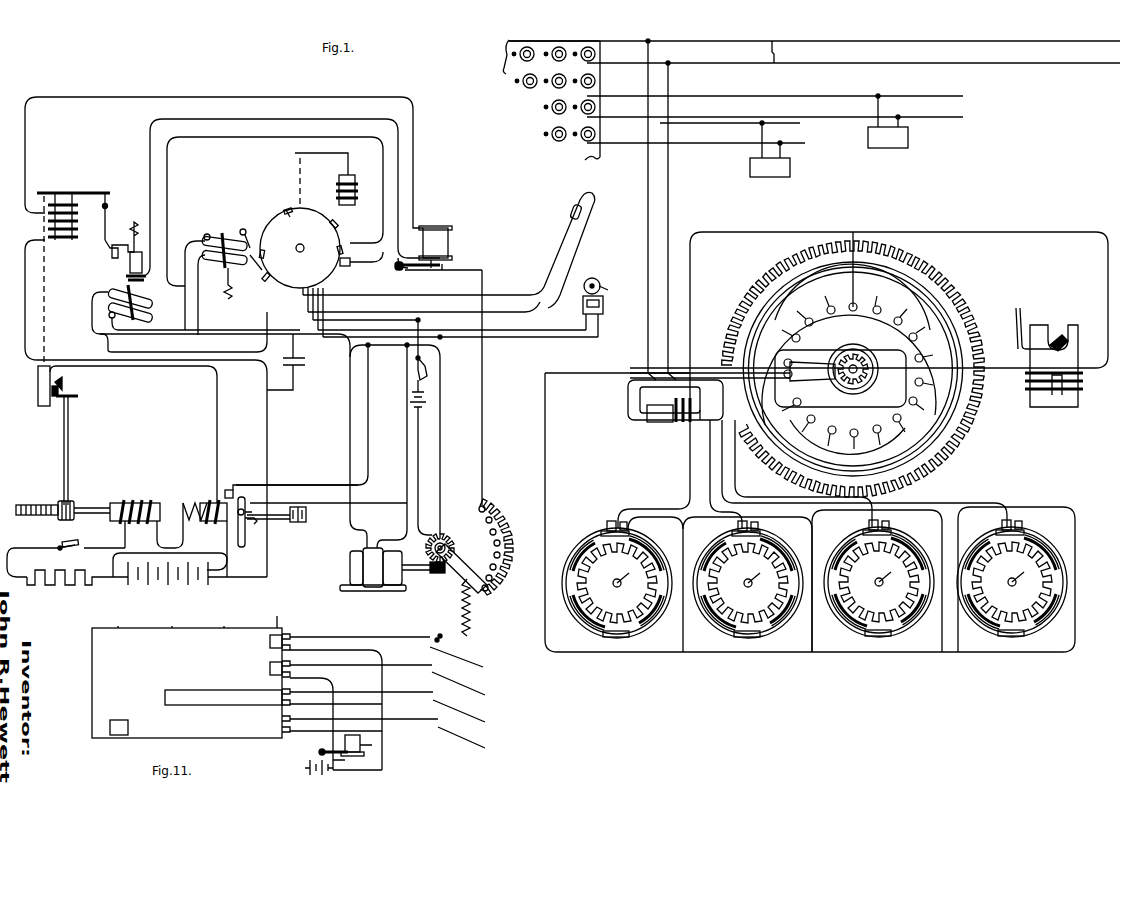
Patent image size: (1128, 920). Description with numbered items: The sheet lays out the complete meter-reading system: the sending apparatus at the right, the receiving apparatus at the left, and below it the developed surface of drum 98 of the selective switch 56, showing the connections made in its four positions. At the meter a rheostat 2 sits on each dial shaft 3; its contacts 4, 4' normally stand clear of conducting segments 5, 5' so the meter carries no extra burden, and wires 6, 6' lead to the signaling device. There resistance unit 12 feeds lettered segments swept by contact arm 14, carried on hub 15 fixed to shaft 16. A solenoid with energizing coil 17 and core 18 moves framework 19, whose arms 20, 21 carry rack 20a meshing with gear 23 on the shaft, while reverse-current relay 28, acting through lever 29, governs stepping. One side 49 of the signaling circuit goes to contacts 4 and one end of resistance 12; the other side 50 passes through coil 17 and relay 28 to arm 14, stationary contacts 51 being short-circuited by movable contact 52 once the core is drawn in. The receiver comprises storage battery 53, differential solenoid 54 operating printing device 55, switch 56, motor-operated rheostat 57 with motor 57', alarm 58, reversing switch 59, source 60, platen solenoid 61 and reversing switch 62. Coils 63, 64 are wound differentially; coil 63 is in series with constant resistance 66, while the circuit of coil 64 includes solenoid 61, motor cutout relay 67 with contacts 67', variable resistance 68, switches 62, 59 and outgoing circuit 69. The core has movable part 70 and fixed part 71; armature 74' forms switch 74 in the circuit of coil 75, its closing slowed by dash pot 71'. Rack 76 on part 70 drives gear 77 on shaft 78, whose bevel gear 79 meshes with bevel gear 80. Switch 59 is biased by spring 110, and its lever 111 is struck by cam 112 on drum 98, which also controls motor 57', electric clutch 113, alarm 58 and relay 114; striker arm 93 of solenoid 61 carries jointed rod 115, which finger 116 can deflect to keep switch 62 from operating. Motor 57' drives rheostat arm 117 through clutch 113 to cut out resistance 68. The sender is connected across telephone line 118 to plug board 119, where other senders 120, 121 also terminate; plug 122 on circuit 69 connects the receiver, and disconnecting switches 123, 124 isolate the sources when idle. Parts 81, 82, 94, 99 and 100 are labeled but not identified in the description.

In FIG. 1, the rheostat 2 is at (814, 583).
In FIG. 1, the dial shaft 3 is at (812, 577).
In FIG. 1, the contact 4 is at (833, 523).
In FIG. 1, the contact 4' is at (794, 522).
In FIG. 1, the conducting segment 5 is at (808, 540).
In FIG. 1, the conducting segment 5' is at (803, 543).
In FIG. 1, the electric wire 6 is at (817, 512).
In FIG. 1, the electric wire 6' is at (812, 475).
In FIG. 1, the resistance unit 12 is at (738, 333).
In FIG. 1, the contact arm 14 is at (818, 378).
In FIG. 1, the hub 15 is at (848, 380).
In FIG. 1, the shaft 16 is at (853, 392).
In FIG. 1, the energizing coil 17 is at (676, 420).
In FIG. 1, the central core 18 is at (652, 418).
In FIG. 1, the framework 19 is at (640, 398).
In FIG. 1, the arm 20 is at (634, 380).
In FIG. 1, the rack 20a is at (833, 342).
In FIG. 1, the arm 21 is at (700, 420).
In FIG. 1, the gear 23 is at (858, 356).
In FIG. 1, the reverse current relay 28 is at (1078, 348).
In FIG. 1, the lever 29 is at (1018, 327).
In FIG. 1, the side of signaling circuit 49 is at (648, 336).
In FIG. 1, the side of signaling circuit 50 is at (639, 206).
In FIG. 1, the stationary contact 51 is at (668, 372).
In FIG. 1, the movable contact 52 is at (688, 373).
In FIG. 1, the storage battery 53 is at (190, 578).
In FIG. 1, the differential selective solenoid 54 is at (168, 499).
In FIG. 1, the printing device 55 is at (165, 455).
In FIG. 1, the solenoid operated selective switch 56 is at (321, 180).
In FIG. 1, the motor operated rheostat 57 is at (457, 504).
In FIG. 1, the electric motor 57' is at (387, 569).
In FIG. 1, the alarm 58 is at (604, 298).
In FIG. 1, the reversing switch 59 is at (212, 236).
In FIG. 1, the source of electric energy 60 is at (412, 400).
In FIG. 11, the source of electric energy 60 is at (306, 770).
In FIG. 1, the solenoid 61 is at (48, 228).
In FIG. 1, the reversing switch 62 is at (110, 297).
In FIG. 1, the coil 63 is at (140, 524).
In FIG. 1, the coil 64 is at (205, 535).
In FIG. 1, the constant resistance 66 is at (77, 586).
In FIG. 1, the motor cutout relay 67 is at (446, 246).
In FIG. 11, the motor cutout relay 67 is at (353, 752).
In FIG. 1, the contacts 67' is at (438, 272).
In FIG. 1, the variable resistance 68 is at (504, 505).
In FIG. 1, the wire 69 is at (508, 300).
In FIG. 1, the movable core portion 70 is at (112, 518).
In FIG. 1, the fixed core portion 71 is at (229, 529).
In FIG. 1, the dash pot 71' is at (278, 527).
In FIG. 1, the switch 74 is at (288, 481).
In FIG. 1, the armature 74' is at (252, 522).
In FIG. 1, the coil 75 is at (362, 190).
In FIG. 1, the axial rack 76 is at (52, 517).
In FIG. 1, the gear 77 is at (60, 502).
In FIG. 1, the shaft 78 is at (64, 447).
In FIG. 1, the bevel gear 79 is at (70, 396).
In FIG. 1, the bevel gear 80 is at (62, 382).
In FIG. 1, the contact 81 is at (50, 405).
In FIG. 1, the indicator 82 is at (38, 387).
In FIG. 1, the striker arm 93 is at (224, 162).
In FIG. 1, the electromagnet 94 is at (69, 216).
In FIG. 1, the drum 98 is at (320, 227).
In FIG. 11, the drum 98 is at (98, 670).
In FIG. 1, the contact 99 is at (290, 217).
In FIG. 11, the contact 99 is at (165, 696).
In FIG. 1, the brush 100 is at (345, 256).
In FIG. 11, the brush 100 is at (286, 640).
In FIG. 1, the spring 110 is at (216, 283).
In FIG. 1, the operating lever 111 is at (256, 231).
In FIG. 1, the cam 112 is at (262, 280).
In FIG. 1, the electric clutch 113 is at (447, 540).
In FIG. 1, the relay 114 is at (283, 202).
In FIG. 1, the jointed rod 115 is at (108, 207).
In FIG. 1, the finger 116 is at (112, 255).
In FIG. 1, the rheostat arm 117 is at (458, 572).
In FIG. 1, the telephone line 118 is at (772, 66).
In FIG. 1, the plug board 119 is at (560, 44).
In FIG. 1, the sending apparatus 120 is at (790, 166).
In FIG. 1, the sending apparatus 121 is at (908, 137).
In FIG. 1, the plug 122 is at (583, 213).
In FIG. 1, the disconnecting switch 123 is at (56, 546).
In FIG. 1, the disconnecting switch 124 is at (430, 374).